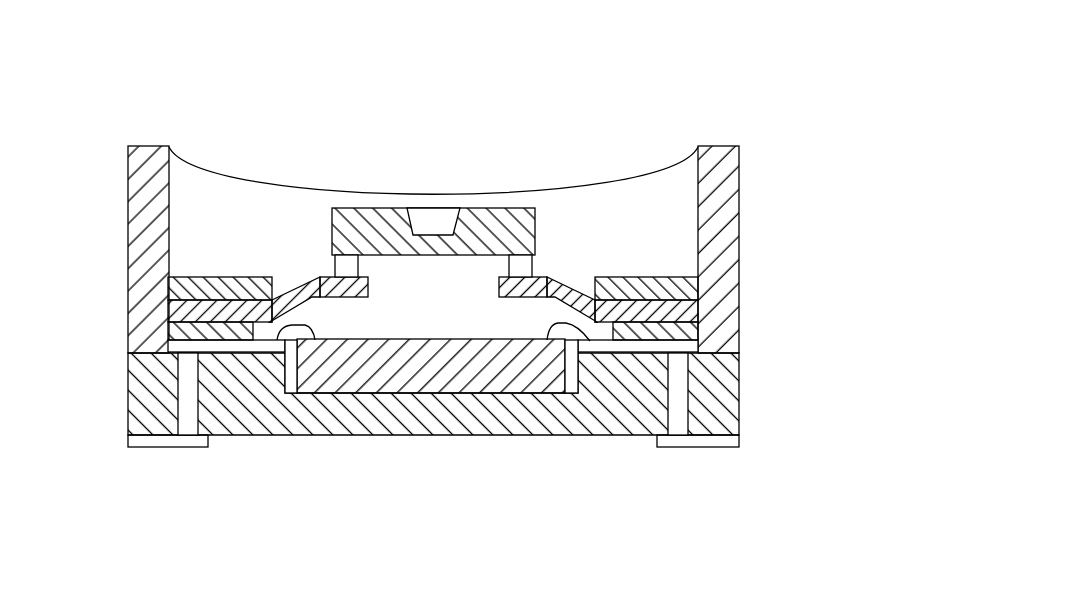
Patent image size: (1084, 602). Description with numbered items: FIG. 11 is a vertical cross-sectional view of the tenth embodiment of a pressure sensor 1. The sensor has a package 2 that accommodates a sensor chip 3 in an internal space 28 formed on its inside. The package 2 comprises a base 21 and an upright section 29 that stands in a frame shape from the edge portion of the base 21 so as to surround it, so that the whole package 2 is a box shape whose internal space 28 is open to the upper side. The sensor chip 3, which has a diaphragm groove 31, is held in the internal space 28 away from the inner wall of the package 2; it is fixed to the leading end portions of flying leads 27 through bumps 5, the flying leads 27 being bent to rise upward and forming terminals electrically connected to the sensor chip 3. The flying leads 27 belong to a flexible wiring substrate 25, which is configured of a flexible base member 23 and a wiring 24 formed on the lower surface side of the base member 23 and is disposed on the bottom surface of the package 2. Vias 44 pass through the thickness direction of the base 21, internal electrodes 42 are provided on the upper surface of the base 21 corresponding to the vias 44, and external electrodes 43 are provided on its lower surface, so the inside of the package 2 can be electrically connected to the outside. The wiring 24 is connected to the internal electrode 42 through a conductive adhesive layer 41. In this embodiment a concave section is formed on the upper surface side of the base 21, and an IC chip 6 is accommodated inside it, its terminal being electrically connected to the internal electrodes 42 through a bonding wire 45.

The pressure sensor 1 is at (666, 113).
The package 2 is at (108, 218).
The sensor chip 3 is at (490, 230).
The diaphragm groove 31 is at (425, 223).
The bump 5 is at (348, 268).
The IC chip 6 is at (447, 368).
The base 21 is at (510, 418).
The base member 23 is at (675, 288).
The wiring 24 is at (677, 312).
The flexible wiring substrate 25 is at (790, 253).
The flying lead 27 is at (300, 310).
The internal space 28 is at (503, 318).
The upright section 29 is at (713, 227).
The conductive adhesive layer 41 is at (188, 330).
The internal electrode 42 is at (240, 348).
The external electrode 43 is at (192, 440).
The via 44 is at (187, 400).
The bonding wire 45 is at (291, 322).